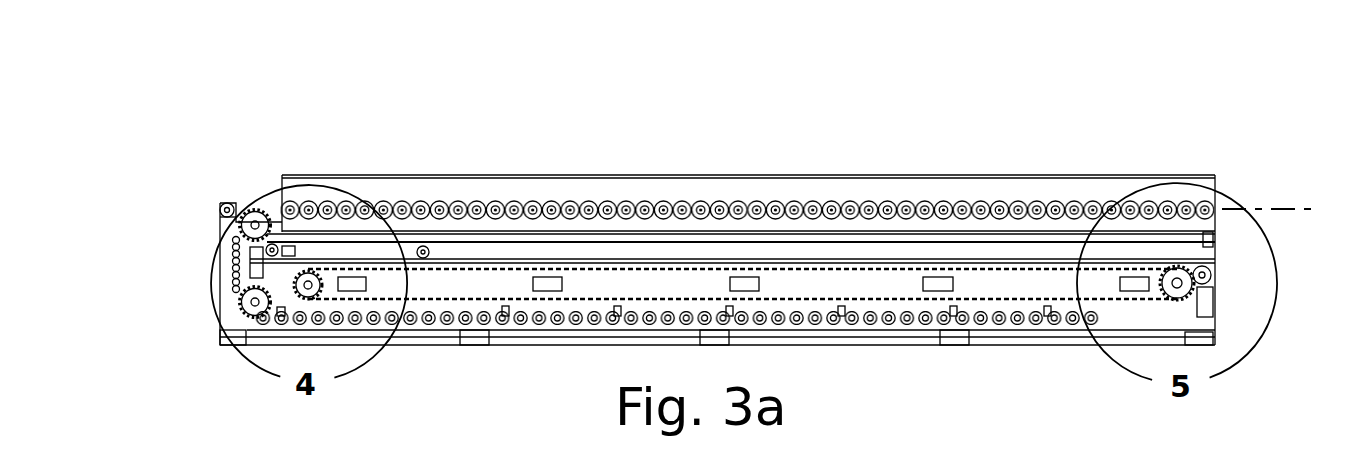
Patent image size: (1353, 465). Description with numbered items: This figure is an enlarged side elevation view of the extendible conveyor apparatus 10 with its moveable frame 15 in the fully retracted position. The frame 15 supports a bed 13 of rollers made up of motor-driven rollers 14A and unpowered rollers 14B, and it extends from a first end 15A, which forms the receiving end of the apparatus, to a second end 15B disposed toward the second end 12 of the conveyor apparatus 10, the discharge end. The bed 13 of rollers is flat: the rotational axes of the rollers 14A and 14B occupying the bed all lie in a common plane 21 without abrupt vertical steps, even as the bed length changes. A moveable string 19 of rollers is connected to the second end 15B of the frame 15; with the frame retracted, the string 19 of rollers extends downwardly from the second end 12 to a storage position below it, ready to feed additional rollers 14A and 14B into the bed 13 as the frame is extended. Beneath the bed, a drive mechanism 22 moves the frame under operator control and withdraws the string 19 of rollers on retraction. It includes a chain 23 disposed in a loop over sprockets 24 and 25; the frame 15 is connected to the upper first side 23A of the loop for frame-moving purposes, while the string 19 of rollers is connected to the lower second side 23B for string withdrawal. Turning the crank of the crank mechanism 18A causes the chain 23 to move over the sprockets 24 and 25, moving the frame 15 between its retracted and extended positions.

The conveyor apparatus 10 is at (272, 126).
The second end 12 is at (232, 203).
The bed of rollers 13 is at (781, 184).
The motor-driven rollers 14A is at (663, 202).
The unpowered rollers 14B is at (850, 202).
The frame 15 is at (1001, 176).
The first end of the frame 15A is at (1205, 180).
The second end of the frame 15B is at (296, 175).
The crank mechanism 18A is at (1211, 278).
The string of rollers 19 is at (430, 322).
The common plane 21 is at (1312, 207).
The drive mechanism 22 is at (489, 292).
The chain 23 is at (863, 270).
The first side of the loop 23A is at (1017, 272).
The second side of the loop 23B is at (917, 300).
The sprocket 24 is at (1182, 286).
The sprocket 25 is at (306, 290).